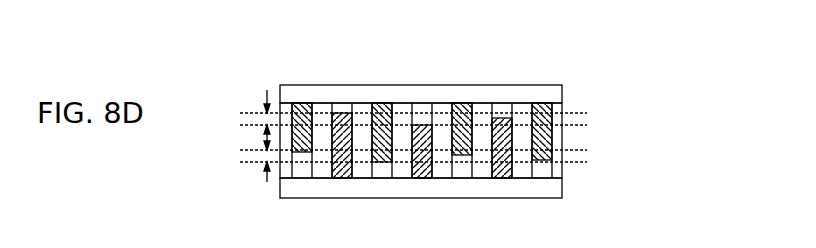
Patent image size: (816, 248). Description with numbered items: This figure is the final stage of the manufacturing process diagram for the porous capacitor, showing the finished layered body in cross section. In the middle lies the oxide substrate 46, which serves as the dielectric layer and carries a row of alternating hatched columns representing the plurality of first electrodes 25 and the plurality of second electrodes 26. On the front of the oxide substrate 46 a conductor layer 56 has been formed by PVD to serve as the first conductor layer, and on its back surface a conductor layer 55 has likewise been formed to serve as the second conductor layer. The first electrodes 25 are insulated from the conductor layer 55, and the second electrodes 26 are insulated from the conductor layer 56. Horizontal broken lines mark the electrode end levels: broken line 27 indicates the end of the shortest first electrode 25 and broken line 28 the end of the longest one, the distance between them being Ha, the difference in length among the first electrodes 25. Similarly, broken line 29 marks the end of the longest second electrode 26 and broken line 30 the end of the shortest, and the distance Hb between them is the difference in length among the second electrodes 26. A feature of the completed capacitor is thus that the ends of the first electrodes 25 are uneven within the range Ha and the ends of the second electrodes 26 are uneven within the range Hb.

The first electrodes 25 is at (305, 104).
The second electrodes 26 is at (347, 104).
The broken line 27 is at (270, 150).
The broken line 28 is at (263, 163).
The broken line 29 is at (262, 113).
The broken line 30 is at (264, 125).
The distance Ha is at (267, 162).
The distance Hb is at (267, 113).
The oxide substrate 46 is at (563, 140).
The conductor layer 55 is at (563, 186).
The conductor layer 56 is at (563, 90).